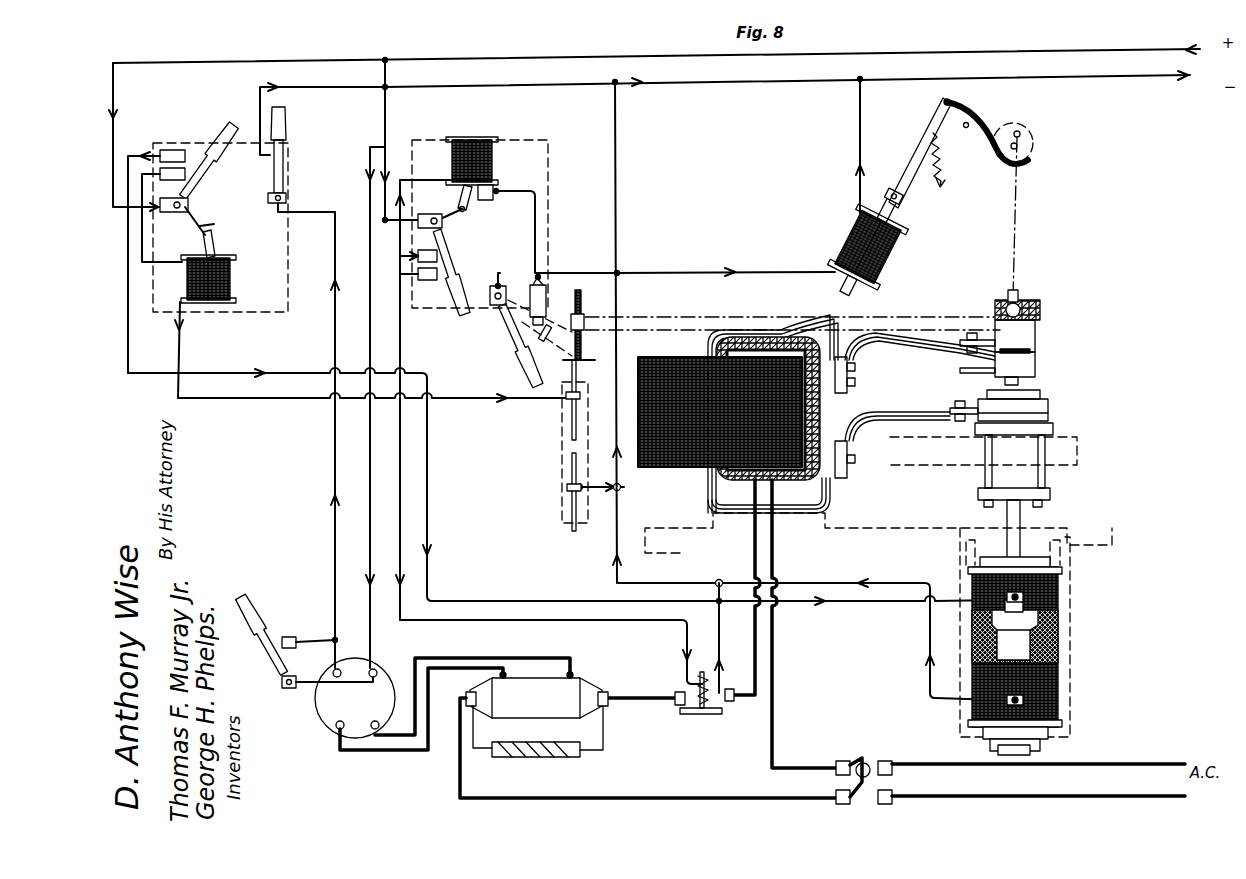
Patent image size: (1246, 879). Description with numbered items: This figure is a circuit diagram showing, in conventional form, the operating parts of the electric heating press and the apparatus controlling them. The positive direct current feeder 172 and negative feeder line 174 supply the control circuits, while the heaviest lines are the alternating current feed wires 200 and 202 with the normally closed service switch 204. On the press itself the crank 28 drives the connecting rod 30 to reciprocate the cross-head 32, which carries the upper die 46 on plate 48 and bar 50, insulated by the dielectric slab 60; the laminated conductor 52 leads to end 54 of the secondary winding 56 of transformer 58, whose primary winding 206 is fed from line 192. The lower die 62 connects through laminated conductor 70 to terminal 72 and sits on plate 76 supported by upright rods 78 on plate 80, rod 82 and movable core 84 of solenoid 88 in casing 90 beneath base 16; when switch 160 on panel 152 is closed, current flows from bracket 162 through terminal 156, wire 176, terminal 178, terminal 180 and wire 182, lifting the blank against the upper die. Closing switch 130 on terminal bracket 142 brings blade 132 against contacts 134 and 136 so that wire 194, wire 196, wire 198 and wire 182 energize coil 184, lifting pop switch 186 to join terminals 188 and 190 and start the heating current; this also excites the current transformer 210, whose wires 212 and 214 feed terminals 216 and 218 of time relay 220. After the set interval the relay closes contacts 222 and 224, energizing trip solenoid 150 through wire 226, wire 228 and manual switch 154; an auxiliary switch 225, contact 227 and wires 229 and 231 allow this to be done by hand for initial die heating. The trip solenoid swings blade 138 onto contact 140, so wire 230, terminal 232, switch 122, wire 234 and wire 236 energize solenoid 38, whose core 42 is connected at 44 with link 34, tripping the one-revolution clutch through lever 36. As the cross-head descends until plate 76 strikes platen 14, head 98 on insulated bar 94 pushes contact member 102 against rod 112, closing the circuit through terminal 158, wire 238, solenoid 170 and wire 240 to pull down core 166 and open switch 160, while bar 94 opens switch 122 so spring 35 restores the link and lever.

The platen 14 is at (1080, 442).
The base 16 is at (1118, 532).
The eccentric or crank 28 is at (1024, 143).
The connecting rod 30 is at (1020, 200).
The cross-head 32 is at (1030, 336).
The link 34 is at (916, 146).
The spring 35 is at (946, 170).
The lever 36 is at (980, 128).
The solenoid 38 is at (896, 258).
The core 42 is at (840, 288).
The connection 44 is at (908, 202).
The upper die 46 is at (1040, 375).
The plate 48 is at (982, 368).
The bar 50 is at (1030, 358).
The laminated conductor 52 is at (925, 346).
The end of secondary winding 54 is at (848, 386).
The secondary winding 56 is at (766, 330).
The alternating current transformer 58 is at (700, 348).
The slab of dielectric material 60 is at (994, 318).
The lower die 62 is at (1050, 406).
The laminated conductor 70 is at (912, 410).
The terminal 72 is at (840, 440).
The plate 76 is at (1052, 430).
The upright rods 78 is at (1038, 458).
The plate 80 is at (1050, 492).
The rod 82 is at (1022, 517).
The movable core 84 is at (1030, 648).
The solenoid 88 is at (1058, 628).
The yoke or casing 90 is at (1072, 724).
The insulated bar 94 is at (582, 318).
The head 98 is at (584, 350).
The contact member 102 is at (560, 422).
The contact rod 112 is at (565, 470).
The switch 122 is at (492, 345).
The switch 130 is at (465, 308).
The blade 132 is at (455, 276).
The contact 134 is at (440, 240).
The contact 136 is at (445, 258).
The blade 138 is at (486, 210).
The contact 140 is at (490, 188).
The terminal bracket 142 is at (425, 214).
The solenoid 150 is at (490, 146).
The switch panel 152 is at (258, 312).
The manually operated switch 154 is at (290, 118).
The terminal 156 is at (168, 148).
The terminal 158 is at (180, 168).
The switch 160 is at (203, 180).
The terminal bracket 162 is at (182, 216).
The movable core 166 is at (232, 252).
The solenoid 170 is at (230, 278).
The positive D. C. feeder 172 is at (552, 57).
The negative feeder D. C. line 174 is at (480, 86).
The wire 176 is at (160, 378).
The terminal 178 is at (1035, 590).
The terminal 180 is at (1035, 698).
The wire 182 is at (620, 202).
The coil 184 is at (680, 684).
The pop switch 186 is at (700, 716).
The terminal 188 is at (676, 712).
The terminal 190 is at (738, 702).
The A. C. line 192 is at (760, 560).
The wire 194 is at (392, 116).
The wire 196 is at (620, 622).
The wire 198 is at (718, 648).
The A. C. feed wire 200 is at (920, 766).
The A. C. feed wire 202 is at (780, 560).
The service switch 204 is at (853, 760).
The primary winding 206 is at (772, 484).
The current transformer 210 is at (649, 738).
The wire 212 is at (514, 654).
The wire 214 is at (470, 670).
The terminal 216 is at (336, 726).
The terminal 218 is at (378, 722).
The time relay 220 is at (355, 698).
The relay contact 222 is at (340, 668).
The relay contact 224 is at (378, 668).
The switch 225 is at (250, 608).
The wire 226 is at (400, 145).
The contact 227 is at (288, 636).
The wire 228 is at (330, 440).
The wire 229 is at (308, 678).
The wire 230 is at (540, 230).
The wire 231 is at (315, 636).
The switch terminal 232 is at (548, 285).
The wire 234 is at (755, 272).
The wire 236 is at (858, 130).
The wire 238 is at (170, 251).
The wire 240 is at (180, 360).